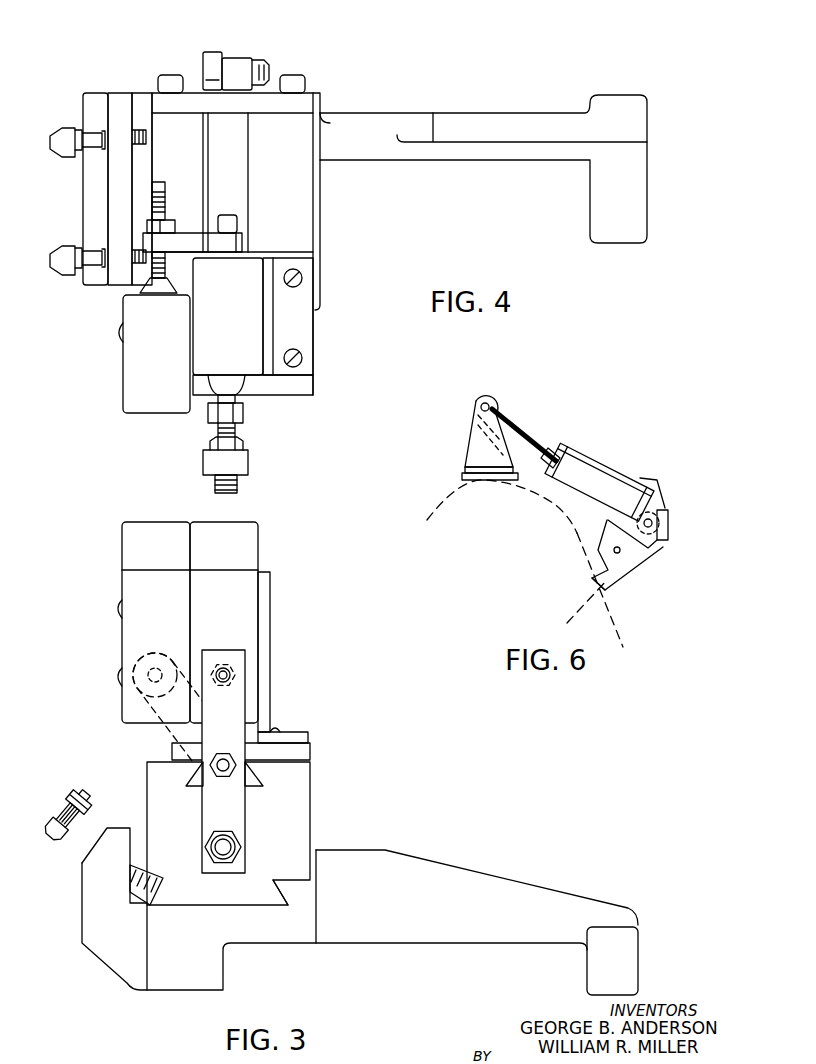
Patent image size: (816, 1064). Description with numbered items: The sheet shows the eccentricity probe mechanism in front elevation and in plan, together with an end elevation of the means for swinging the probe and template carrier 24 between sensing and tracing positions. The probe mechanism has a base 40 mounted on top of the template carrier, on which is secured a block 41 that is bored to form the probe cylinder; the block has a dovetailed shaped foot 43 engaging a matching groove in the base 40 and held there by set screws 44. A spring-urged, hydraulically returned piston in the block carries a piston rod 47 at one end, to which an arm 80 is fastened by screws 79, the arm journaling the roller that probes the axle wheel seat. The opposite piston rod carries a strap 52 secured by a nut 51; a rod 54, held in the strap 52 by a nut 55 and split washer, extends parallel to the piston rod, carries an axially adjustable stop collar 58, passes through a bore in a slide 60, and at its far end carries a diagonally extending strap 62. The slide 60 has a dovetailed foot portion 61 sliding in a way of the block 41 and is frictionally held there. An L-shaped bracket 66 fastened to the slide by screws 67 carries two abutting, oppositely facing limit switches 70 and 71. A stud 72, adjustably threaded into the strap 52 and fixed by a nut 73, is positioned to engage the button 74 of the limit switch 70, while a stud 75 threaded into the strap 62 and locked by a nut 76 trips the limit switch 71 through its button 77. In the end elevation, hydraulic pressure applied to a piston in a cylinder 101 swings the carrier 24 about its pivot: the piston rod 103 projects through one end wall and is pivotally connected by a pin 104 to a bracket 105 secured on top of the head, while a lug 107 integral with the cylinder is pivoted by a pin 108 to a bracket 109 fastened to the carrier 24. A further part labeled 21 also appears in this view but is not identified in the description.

In FIG. 6, the roll 21 is at (623, 557).
In FIG. 6, the probe and template carrier 24 is at (614, 579).
In FIG. 4, the base 40 is at (532, 122).
In FIG. 3, the base 40 is at (566, 898).
In FIG. 4, the block 41 is at (316, 220).
In FIG. 3, the block 41 is at (309, 832).
In FIG. 3, the dovetailed shaped foot 43 is at (249, 898).
In FIG. 4, the set screws 44 is at (60, 152).
In FIG. 3, the set screws 44 is at (80, 826).
In FIG. 4, the piston rod 47 is at (234, 62).
In FIG. 3, the nut 51 is at (240, 850).
In FIG. 4, the strap 52 is at (249, 463).
In FIG. 3, the strap 52 is at (246, 809).
In FIG. 4, the rod 54 is at (228, 214).
In FIG. 3, the nut 55 is at (223, 781).
In FIG. 4, the stop collar 58 is at (244, 413).
In FIG. 3, the slide 60 is at (310, 750).
In FIG. 3, the dovetailed foot portion 61 is at (261, 776).
In FIG. 4, the strap 62 is at (189, 240).
In FIG. 3, the strap 62 is at (176, 740).
In FIG. 4, the L-shaped bracket 66 is at (307, 330).
In FIG. 3, the L-shaped bracket 66 is at (267, 682).
In FIG. 4, the screws 67 is at (306, 360).
In FIG. 3, the screws 67 is at (280, 732).
In FIG. 4, the limit switch 70 is at (228, 316).
In FIG. 3, the limit switch 70 is at (224, 622).
In FIG. 4, the limit switch 71 is at (154, 354).
In FIG. 3, the limit switch 71 is at (154, 622).
In FIG. 4, the stud 72 is at (236, 430).
In FIG. 3, the stud 72 is at (224, 667).
In FIG. 4, the nut 73 is at (210, 443).
In FIG. 4, the button 74 is at (243, 386).
In FIG. 4, the stud 75 is at (162, 192).
In FIG. 4, the nut 76 is at (168, 226).
In FIG. 4, the button 77 is at (148, 285).
In FIG. 4, the screws 79 is at (268, 72).
In FIG. 4, the arm 80 is at (205, 67).
In FIG. 6, the cylinder 101 is at (607, 469).
In FIG. 6, the rod 103 is at (536, 445).
In FIG. 6, the pin 104 is at (491, 402).
In FIG. 6, the bracket 105 is at (471, 451).
In FIG. 6, the lug 107 is at (651, 519).
In FIG. 6, the pin 108 is at (649, 543).
In FIG. 6, the bracket 109 is at (668, 522).